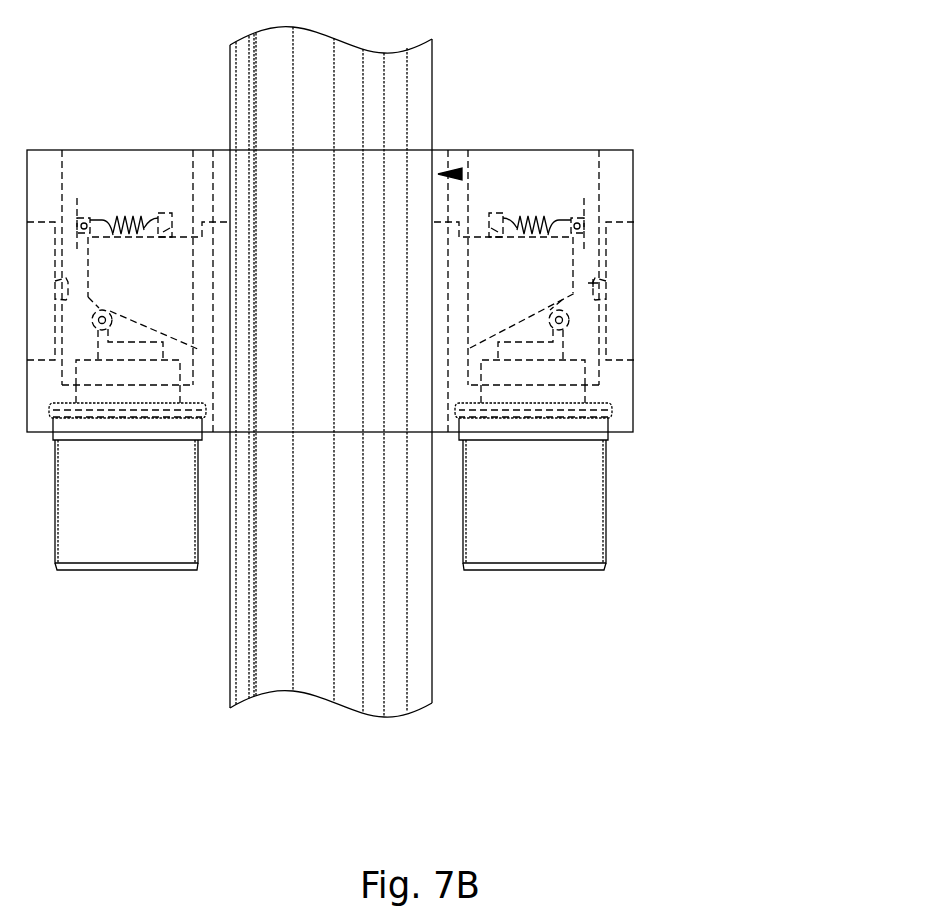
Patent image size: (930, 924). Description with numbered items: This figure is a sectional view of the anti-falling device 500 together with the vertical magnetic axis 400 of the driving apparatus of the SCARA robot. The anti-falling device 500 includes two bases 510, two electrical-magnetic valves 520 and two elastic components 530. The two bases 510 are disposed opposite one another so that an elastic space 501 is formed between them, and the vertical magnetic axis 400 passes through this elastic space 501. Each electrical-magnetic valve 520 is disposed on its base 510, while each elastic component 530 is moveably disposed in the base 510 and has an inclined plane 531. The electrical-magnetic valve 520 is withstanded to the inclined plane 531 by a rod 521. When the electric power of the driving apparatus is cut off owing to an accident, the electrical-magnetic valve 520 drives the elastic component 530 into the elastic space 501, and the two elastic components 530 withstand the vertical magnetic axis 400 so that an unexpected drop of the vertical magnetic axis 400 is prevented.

The vertical magnetic axis 400 is at (230, 62).
The anti-falling device 500 is at (757, 63).
The elastic space 501 is at (463, 173).
The base 510 is at (618, 175).
The electrical-magnetic valve 520 is at (583, 495).
The rod 521 is at (565, 327).
The elastic component 530 is at (592, 278).
The inclined plane 531 is at (610, 278).